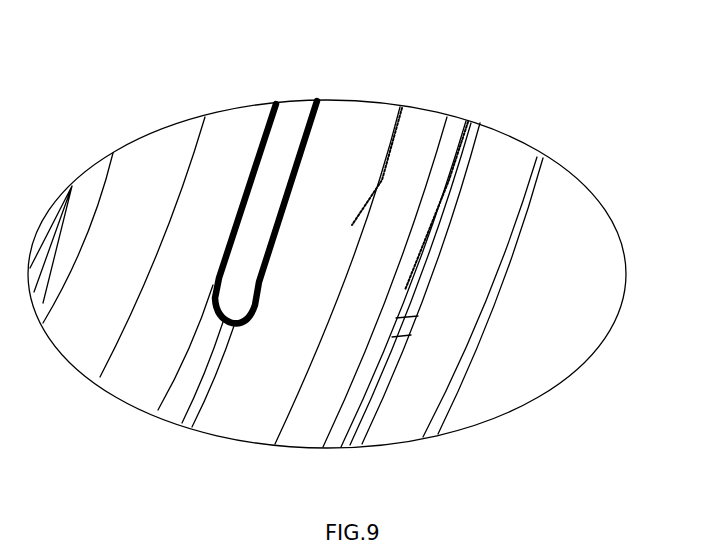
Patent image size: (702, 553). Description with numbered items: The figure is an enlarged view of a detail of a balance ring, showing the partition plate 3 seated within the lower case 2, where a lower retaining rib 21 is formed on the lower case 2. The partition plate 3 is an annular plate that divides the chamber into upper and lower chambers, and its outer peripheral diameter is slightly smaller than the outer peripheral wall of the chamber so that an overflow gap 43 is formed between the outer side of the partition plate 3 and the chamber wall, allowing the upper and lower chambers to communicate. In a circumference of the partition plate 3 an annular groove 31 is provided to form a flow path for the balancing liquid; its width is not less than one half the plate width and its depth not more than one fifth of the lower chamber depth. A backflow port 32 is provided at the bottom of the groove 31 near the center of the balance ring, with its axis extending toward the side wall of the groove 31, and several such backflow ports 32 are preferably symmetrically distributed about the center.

The lower case 2 is at (643, 340).
The partition plate 3 is at (329, 153).
The lower retaining rib 21 is at (583, 407).
The groove 31 is at (397, 55).
The backflow port 32 is at (280, 158).
The overflow gap 43 is at (613, 183).